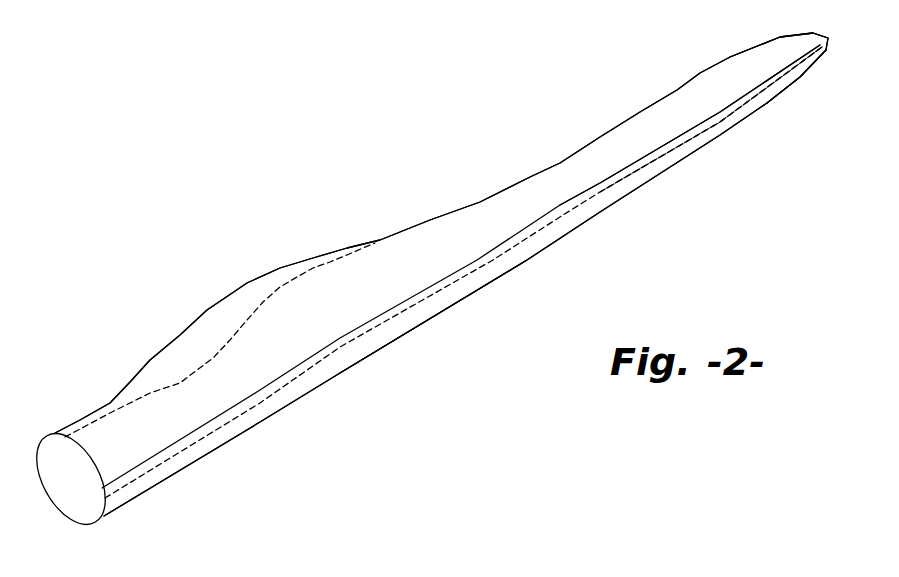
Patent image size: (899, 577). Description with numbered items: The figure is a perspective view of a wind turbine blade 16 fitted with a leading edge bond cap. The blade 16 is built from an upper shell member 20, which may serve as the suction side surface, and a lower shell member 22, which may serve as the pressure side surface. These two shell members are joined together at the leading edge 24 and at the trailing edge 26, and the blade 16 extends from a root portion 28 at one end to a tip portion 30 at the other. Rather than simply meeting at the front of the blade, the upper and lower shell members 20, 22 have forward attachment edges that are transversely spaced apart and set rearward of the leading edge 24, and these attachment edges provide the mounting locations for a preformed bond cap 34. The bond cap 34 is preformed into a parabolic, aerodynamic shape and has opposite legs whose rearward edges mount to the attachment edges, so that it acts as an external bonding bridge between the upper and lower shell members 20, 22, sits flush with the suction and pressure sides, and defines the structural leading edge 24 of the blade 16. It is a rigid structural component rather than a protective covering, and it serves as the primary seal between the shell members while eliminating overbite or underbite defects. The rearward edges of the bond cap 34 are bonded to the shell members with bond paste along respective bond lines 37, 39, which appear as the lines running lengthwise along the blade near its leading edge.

The wind turbine blade 16 is at (398, 108).
The upper shell member 20 is at (247, 352).
The lower shell member 22 is at (331, 336).
The leading edge 24 is at (534, 253).
The trailing edge 26 is at (556, 166).
The root portion 28 is at (113, 440).
The tip portion 30 is at (805, 52).
The bond cap 34 is at (476, 288).
The bond line 37 is at (677, 137).
The bond line 39 is at (697, 135).